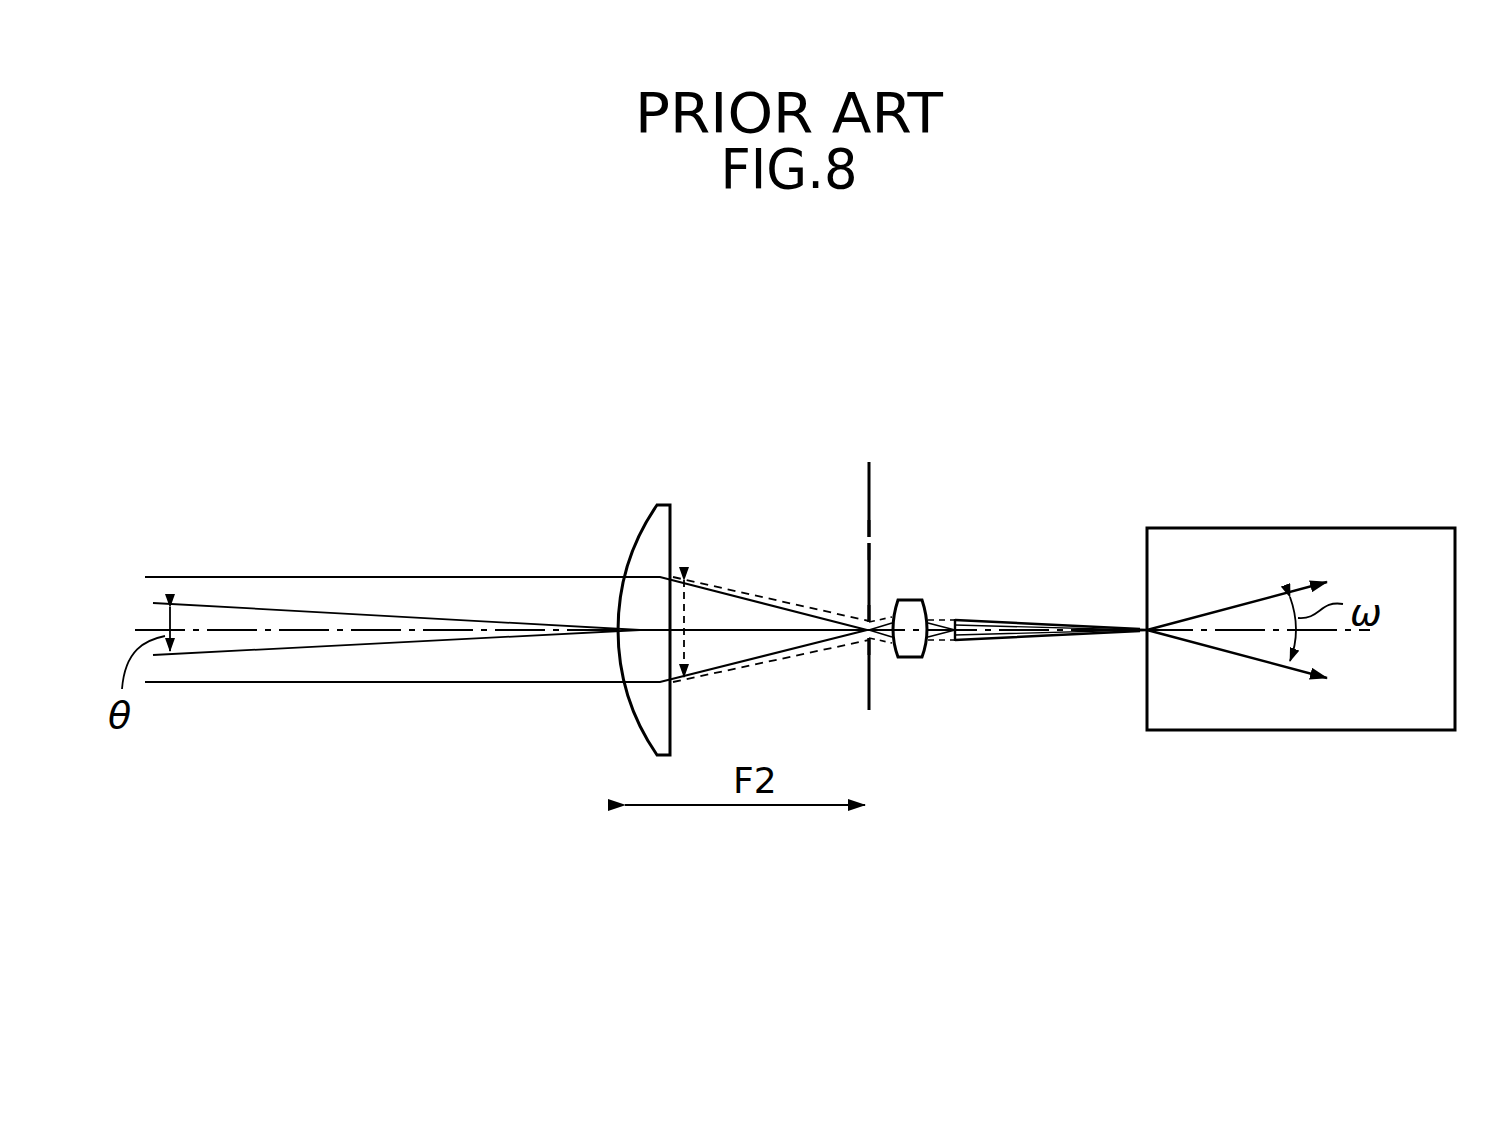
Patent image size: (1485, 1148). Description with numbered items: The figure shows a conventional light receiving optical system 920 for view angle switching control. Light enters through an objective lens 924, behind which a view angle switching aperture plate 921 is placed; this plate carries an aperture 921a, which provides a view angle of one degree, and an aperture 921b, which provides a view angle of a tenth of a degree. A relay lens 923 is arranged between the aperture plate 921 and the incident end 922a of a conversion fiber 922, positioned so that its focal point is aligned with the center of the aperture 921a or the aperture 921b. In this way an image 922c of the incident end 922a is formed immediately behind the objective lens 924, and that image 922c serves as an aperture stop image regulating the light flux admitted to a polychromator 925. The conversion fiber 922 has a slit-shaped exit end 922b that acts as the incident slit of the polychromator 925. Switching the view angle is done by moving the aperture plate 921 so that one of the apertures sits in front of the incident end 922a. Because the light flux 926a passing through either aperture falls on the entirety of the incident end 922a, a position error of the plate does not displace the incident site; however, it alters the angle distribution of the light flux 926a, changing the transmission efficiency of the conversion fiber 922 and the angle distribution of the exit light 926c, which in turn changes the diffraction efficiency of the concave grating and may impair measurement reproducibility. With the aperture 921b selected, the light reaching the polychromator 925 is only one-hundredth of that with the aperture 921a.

The light receiving optical system 920 is at (947, 867).
The view angle switching aperture plate 921 is at (867, 482).
The aperture 921a is at (861, 638).
The aperture 921b is at (878, 539).
The conversion fiber 922 is at (1033, 620).
The incident end 922a is at (952, 639).
The exit end 922b is at (1140, 639).
The image 922c is at (698, 610).
The relay lens 923 is at (912, 605).
The objective lens 924 is at (652, 535).
The polychromator 925 is at (1393, 528).
The light flux 926a is at (253, 577).
The exit light 926c is at (1237, 603).